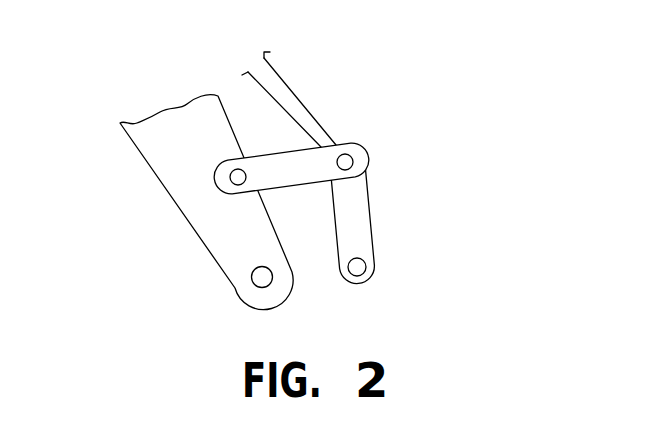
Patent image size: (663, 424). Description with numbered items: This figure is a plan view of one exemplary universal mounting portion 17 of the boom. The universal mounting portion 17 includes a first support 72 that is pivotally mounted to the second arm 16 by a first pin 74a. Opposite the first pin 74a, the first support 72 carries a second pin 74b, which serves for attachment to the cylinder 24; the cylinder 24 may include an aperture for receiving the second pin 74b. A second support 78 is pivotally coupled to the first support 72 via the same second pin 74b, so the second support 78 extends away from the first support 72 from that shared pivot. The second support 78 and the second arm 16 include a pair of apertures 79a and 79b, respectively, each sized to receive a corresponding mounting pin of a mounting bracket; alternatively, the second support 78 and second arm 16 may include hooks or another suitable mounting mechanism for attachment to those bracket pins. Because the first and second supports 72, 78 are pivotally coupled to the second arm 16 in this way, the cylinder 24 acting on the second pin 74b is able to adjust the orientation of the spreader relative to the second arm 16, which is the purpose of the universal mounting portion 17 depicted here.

The second arm 16 is at (150, 133).
The universal mounting portion 17 is at (450, 76).
The cylinder 24 is at (296, 96).
The first support 72 is at (285, 152).
The first pin 74a is at (236, 178).
The second pin 74b is at (348, 162).
The second support 78 is at (357, 217).
The aperture 79a is at (360, 267).
The aperture 79b is at (255, 279).